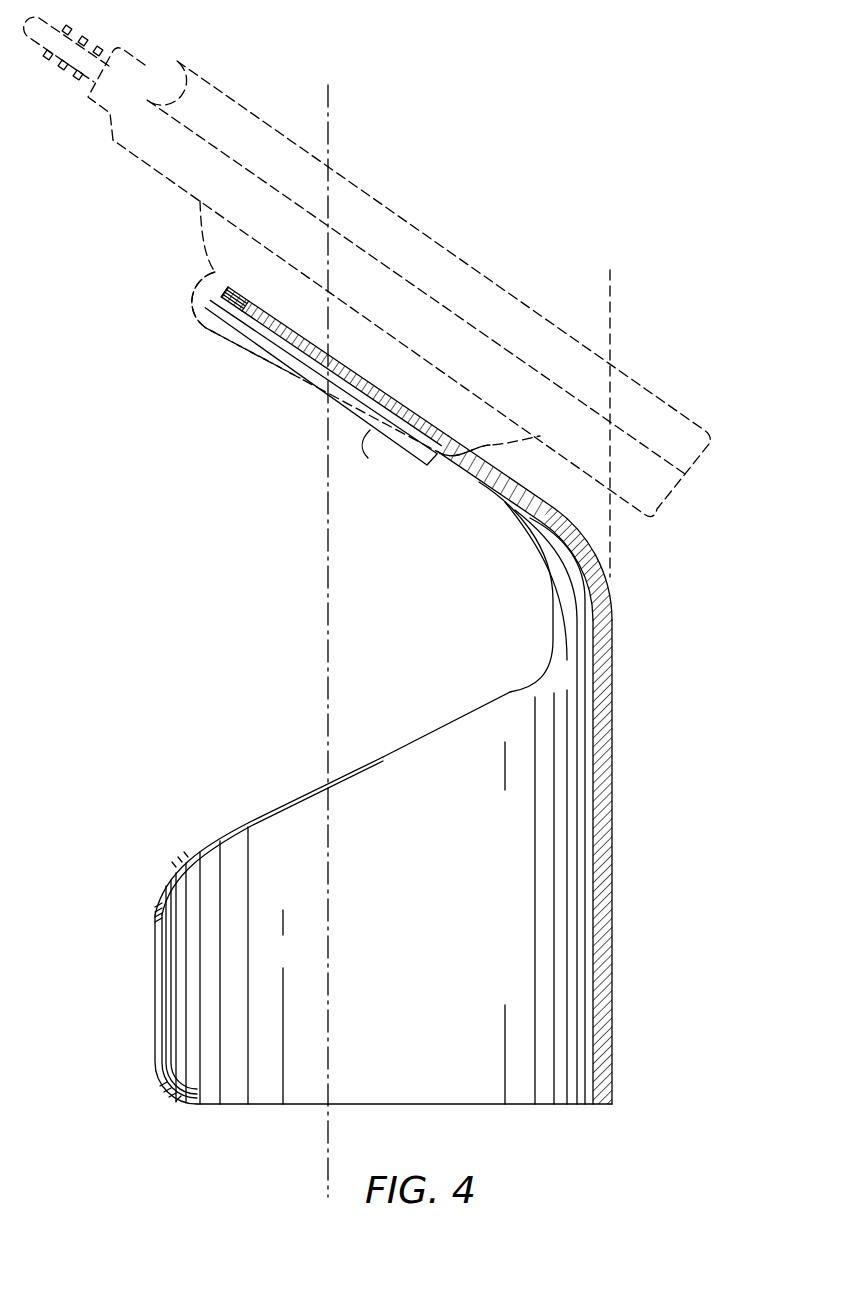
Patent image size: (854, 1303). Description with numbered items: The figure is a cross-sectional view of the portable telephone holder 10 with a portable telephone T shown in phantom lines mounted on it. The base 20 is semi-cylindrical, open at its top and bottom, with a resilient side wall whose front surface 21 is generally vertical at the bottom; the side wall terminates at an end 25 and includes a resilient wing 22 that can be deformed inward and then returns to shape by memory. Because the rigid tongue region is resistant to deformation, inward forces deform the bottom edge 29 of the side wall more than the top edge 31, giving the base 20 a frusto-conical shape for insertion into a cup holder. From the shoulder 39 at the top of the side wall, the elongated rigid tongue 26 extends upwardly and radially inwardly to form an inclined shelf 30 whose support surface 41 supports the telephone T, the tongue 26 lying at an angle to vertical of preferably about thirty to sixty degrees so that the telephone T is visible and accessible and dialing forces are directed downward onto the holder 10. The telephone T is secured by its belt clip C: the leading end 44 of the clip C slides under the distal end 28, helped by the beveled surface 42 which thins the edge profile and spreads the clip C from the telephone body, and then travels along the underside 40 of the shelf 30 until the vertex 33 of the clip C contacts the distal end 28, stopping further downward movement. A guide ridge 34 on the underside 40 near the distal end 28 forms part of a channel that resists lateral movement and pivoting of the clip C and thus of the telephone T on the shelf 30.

The portable telephone holder 10 is at (392, 798).
The base 20 is at (392, 798).
The front surface 21 is at (612, 830).
The wing 22 is at (248, 823).
The end 25 is at (155, 955).
The tongue 26 is at (492, 454).
The distal end 28 is at (222, 288).
The bottom edge 29 is at (468, 1104).
The shelf 30 is at (290, 395).
The top edge 31 is at (510, 690).
The vertex 33 is at (190, 310).
The guide ridge 34 is at (365, 445).
The shoulder 39 is at (553, 632).
The underside 40 is at (317, 365).
The support surface 41 is at (330, 355).
The beveled surface 42 is at (223, 301).
The leading end 44 is at (380, 455).
The belt clip C is at (222, 344).
The portable telephone T is at (343, 176).